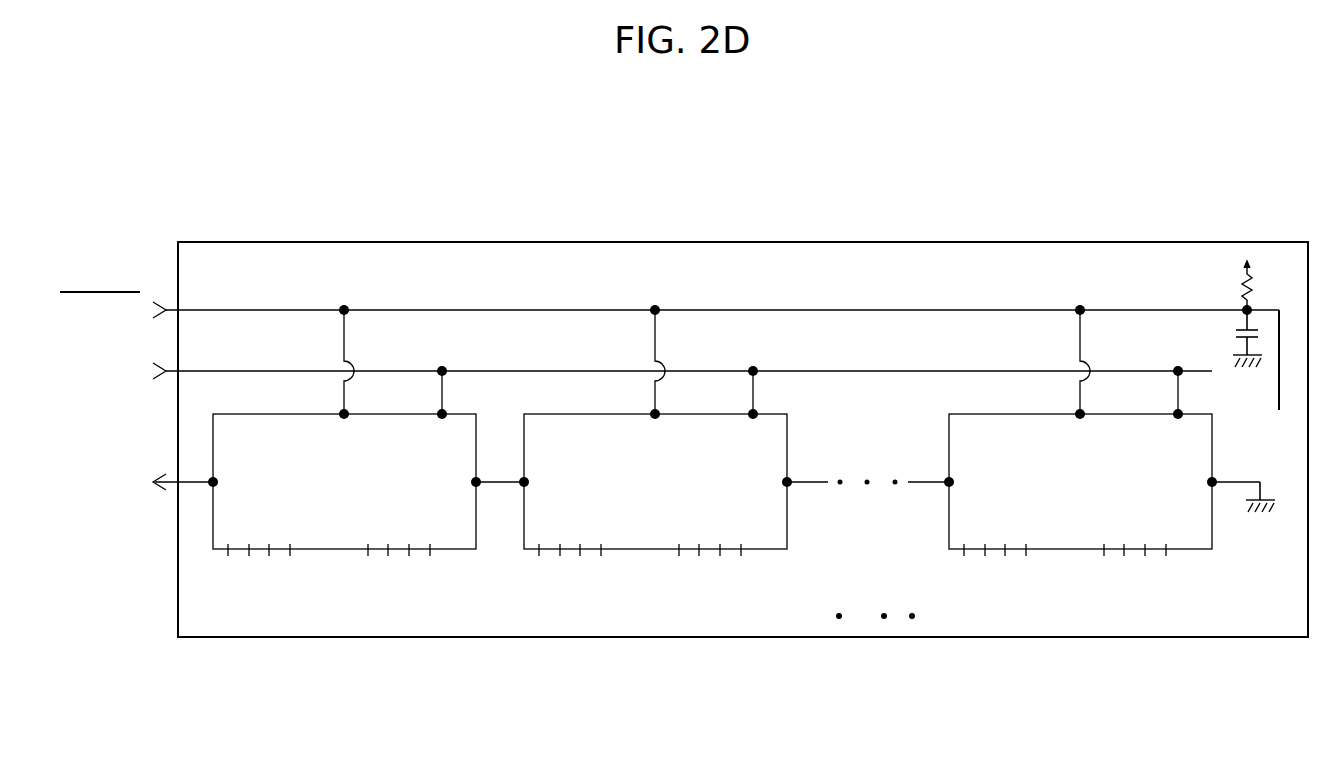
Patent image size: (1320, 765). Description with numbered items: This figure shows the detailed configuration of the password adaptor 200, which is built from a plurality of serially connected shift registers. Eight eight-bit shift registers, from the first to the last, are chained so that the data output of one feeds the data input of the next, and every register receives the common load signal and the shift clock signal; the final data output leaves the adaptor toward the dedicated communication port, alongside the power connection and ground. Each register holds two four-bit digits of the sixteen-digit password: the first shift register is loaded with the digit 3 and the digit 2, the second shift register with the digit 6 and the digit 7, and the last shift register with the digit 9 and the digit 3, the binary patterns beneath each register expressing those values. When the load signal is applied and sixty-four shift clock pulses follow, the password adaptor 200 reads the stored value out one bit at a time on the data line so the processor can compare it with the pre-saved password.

The password adaptor 200 is at (771, 242).
The nibble value 3 is at (698, 570).
The nibble value 2 is at (400, 570).
The nibble value 6 is at (572, 570).
The nibble value 7 is at (711, 570).
The nibble value 9 is at (997, 570).